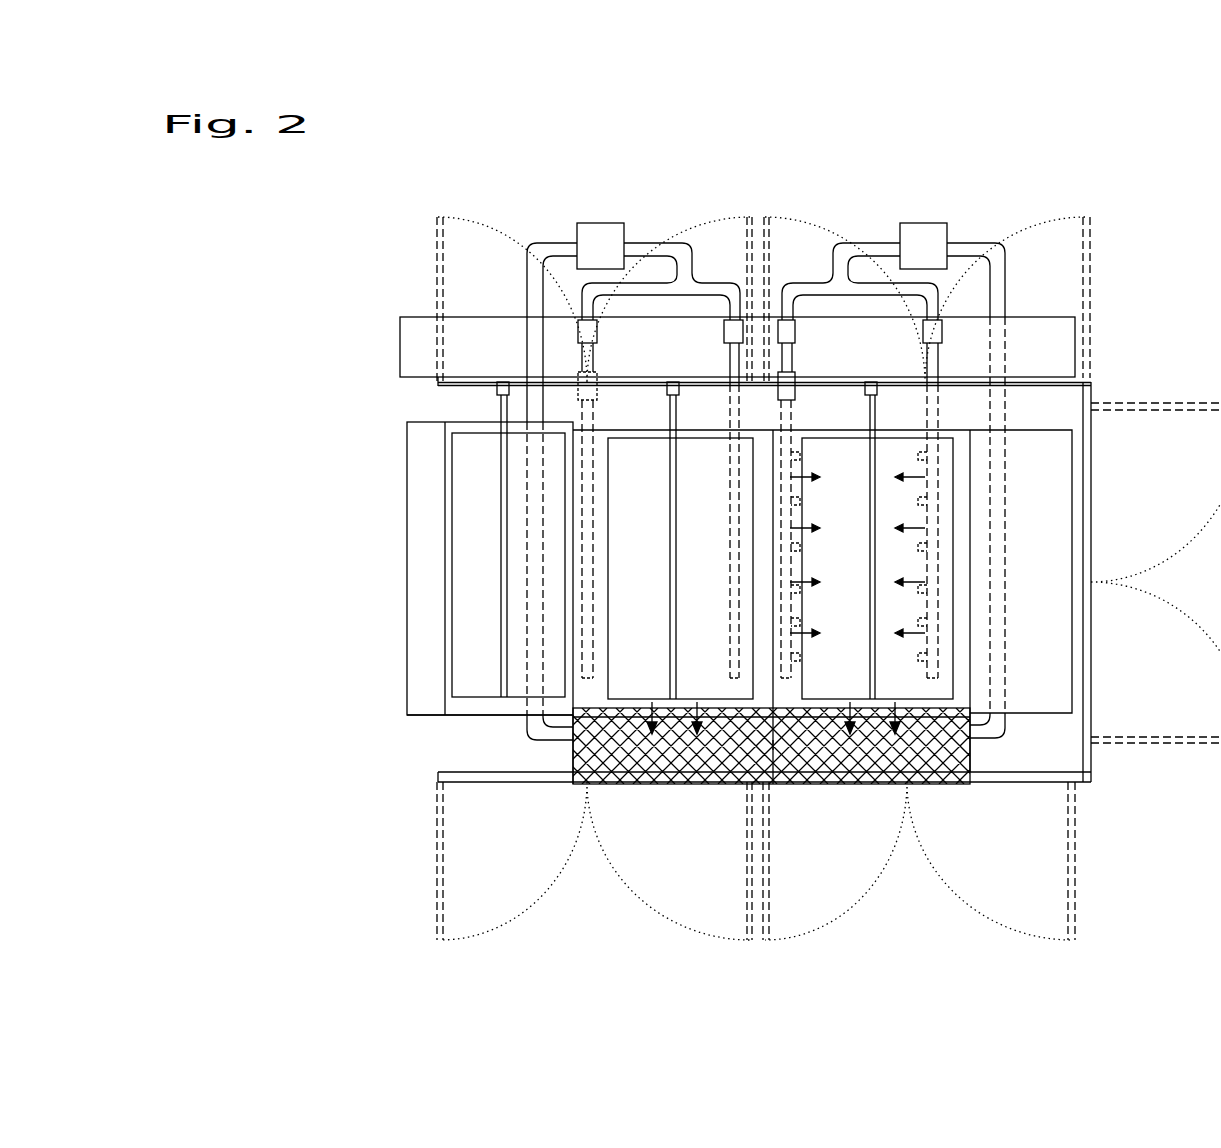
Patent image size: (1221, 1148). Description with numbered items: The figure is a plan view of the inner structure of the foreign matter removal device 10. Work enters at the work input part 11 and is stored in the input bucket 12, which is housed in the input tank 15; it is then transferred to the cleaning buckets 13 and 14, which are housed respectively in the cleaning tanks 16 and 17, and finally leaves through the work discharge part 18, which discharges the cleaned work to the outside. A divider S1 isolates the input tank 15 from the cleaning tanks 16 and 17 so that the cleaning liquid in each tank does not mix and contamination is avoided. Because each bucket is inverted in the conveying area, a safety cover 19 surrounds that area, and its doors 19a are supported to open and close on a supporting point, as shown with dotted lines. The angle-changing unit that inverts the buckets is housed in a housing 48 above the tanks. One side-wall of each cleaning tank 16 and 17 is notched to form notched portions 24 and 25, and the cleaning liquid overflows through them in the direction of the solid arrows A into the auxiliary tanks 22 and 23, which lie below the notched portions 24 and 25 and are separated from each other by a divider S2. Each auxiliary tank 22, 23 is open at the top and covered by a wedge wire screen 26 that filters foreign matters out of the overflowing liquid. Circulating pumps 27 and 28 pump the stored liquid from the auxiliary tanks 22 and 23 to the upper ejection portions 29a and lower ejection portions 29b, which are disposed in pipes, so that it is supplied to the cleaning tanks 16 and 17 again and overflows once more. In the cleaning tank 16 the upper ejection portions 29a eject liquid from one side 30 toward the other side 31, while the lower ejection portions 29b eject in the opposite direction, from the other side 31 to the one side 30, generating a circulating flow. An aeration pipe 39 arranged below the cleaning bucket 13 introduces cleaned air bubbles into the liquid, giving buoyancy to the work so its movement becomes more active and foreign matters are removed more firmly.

The foreign matter removal device 10 is at (1150, 258).
The work input part 11 is at (423, 561).
The input bucket 12 is at (452, 653).
The cleaning bucket 13 is at (607, 647).
The cleaning bucket 14 is at (803, 648).
The input tank 15 is at (482, 708).
The cleaning tank 16 is at (763, 452).
The cleaning tank 17 is at (963, 452).
The work discharge part 18 is at (1058, 604).
The safety cover 19 is at (457, 386).
The door 19a is at (438, 217).
The auxiliary tank 22 is at (686, 760).
The auxiliary tank 23 is at (873, 752).
The notched portion 24 is at (620, 712).
The notched portion 25 is at (820, 712).
The wedge wire screen 26 is at (573, 765).
The circulating pump 27 is at (600, 222).
The circulating pump 28 is at (922, 222).
The upper ejection portion 29a is at (796, 552).
The lower ejection portion 29b is at (930, 562).
The one side 30 is at (776, 610).
The other side 31 is at (972, 612).
The aeration pipe 39 is at (870, 497).
The housing 48 is at (400, 345).
The solid arrows A is at (900, 712).
The divider S1 is at (773, 693).
The divider S2 is at (773, 745).